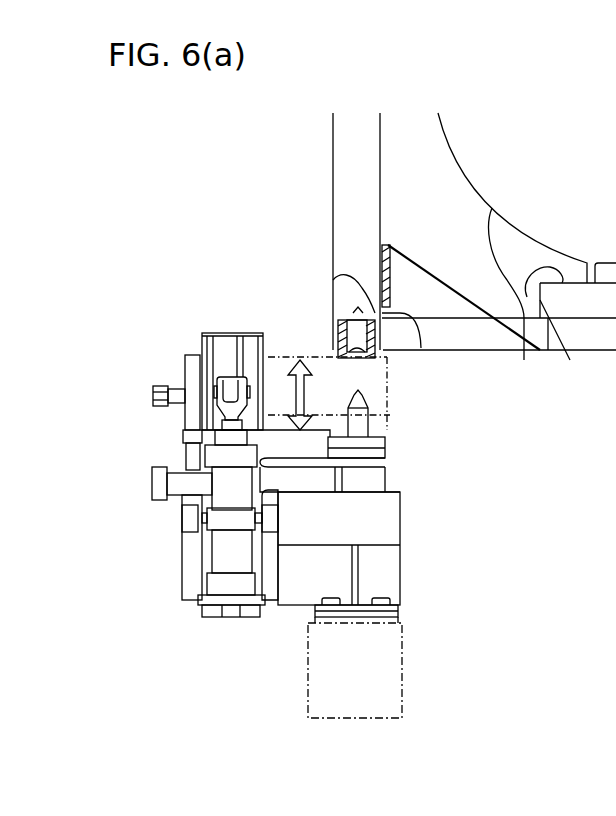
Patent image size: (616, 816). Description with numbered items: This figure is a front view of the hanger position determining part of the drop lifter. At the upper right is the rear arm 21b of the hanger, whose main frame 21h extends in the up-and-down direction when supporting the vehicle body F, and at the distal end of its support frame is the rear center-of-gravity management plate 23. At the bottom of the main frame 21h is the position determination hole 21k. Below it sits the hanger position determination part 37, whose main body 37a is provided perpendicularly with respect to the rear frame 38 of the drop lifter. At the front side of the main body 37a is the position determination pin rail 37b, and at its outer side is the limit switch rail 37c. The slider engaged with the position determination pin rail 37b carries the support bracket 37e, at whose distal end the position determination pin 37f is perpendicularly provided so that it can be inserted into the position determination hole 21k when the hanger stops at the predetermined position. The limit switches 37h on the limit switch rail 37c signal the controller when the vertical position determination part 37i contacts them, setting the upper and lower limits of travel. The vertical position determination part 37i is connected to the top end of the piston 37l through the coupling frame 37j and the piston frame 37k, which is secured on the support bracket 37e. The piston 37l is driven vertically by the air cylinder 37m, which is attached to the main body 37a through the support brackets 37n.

The rear arm 21b is at (333, 142).
The main frame 21h is at (343, 216).
The position determination hole 21k is at (362, 362).
The vehicle body F is at (522, 396).
The rear center-of-gravity management plate 23 is at (571, 398).
The hanger position determination part 37 is at (150, 370).
The main body 37a is at (202, 357).
The position determination pin rail 37b is at (230, 380).
The limit switch rail 37c is at (193, 355).
The piston frame 37k is at (240, 362).
The limit switch 37h is at (168, 405).
The vertical position determination part 37i is at (160, 481).
The coupling frame 37j is at (178, 488).
The support bracket 37n is at (200, 522).
The air cylinder 37m is at (225, 553).
The position determination pin 37f is at (358, 422).
The support bracket 37e is at (373, 476).
The piston 37l is at (275, 433).
The rear frame 38 is at (355, 697).